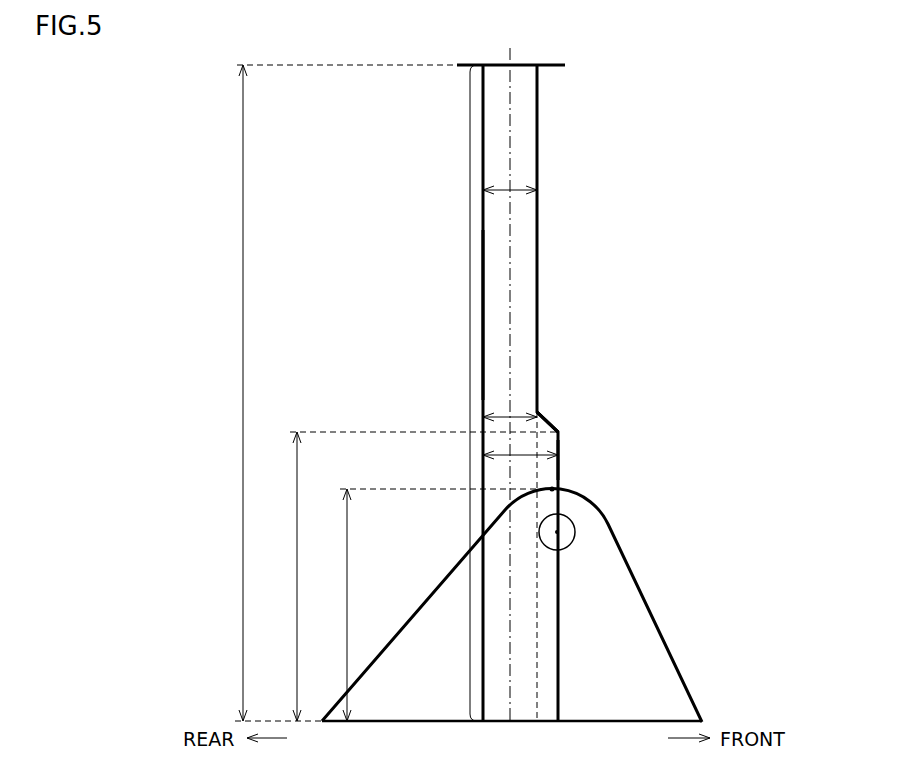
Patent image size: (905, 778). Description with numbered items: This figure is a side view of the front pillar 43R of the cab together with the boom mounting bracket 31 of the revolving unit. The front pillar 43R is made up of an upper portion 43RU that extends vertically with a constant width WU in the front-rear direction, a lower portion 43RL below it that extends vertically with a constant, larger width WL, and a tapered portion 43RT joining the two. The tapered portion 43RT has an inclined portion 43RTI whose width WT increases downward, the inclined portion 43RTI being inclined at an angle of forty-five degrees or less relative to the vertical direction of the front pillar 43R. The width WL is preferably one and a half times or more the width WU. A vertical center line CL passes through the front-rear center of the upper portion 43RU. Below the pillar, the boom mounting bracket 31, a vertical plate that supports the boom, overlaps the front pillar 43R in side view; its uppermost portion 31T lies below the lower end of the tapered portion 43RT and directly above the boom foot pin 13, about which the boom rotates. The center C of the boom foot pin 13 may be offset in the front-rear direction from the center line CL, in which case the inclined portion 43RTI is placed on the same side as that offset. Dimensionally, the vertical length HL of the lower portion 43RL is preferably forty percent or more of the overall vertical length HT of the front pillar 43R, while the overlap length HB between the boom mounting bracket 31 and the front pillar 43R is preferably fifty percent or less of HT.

The front pillar 43R is at (411, 225).
The upper portion 43RU is at (448, 314).
The tapered portion 43RT is at (478, 408).
The lower portion 43RL is at (478, 435).
The inclined portion 43RTI is at (543, 418).
The boom mounting bracket 31 is at (622, 605).
The uppermost portion 31T is at (553, 489).
The boom foot pin 13 is at (560, 533).
The center C is at (558, 516).
The center line CL is at (510, 58).
The vertical length HT is at (229, 393).
The vertical length HL is at (283, 576).
The vertical length HB is at (333, 605).
The width WU is at (512, 188).
The width WT is at (517, 417).
The width WL is at (527, 452).